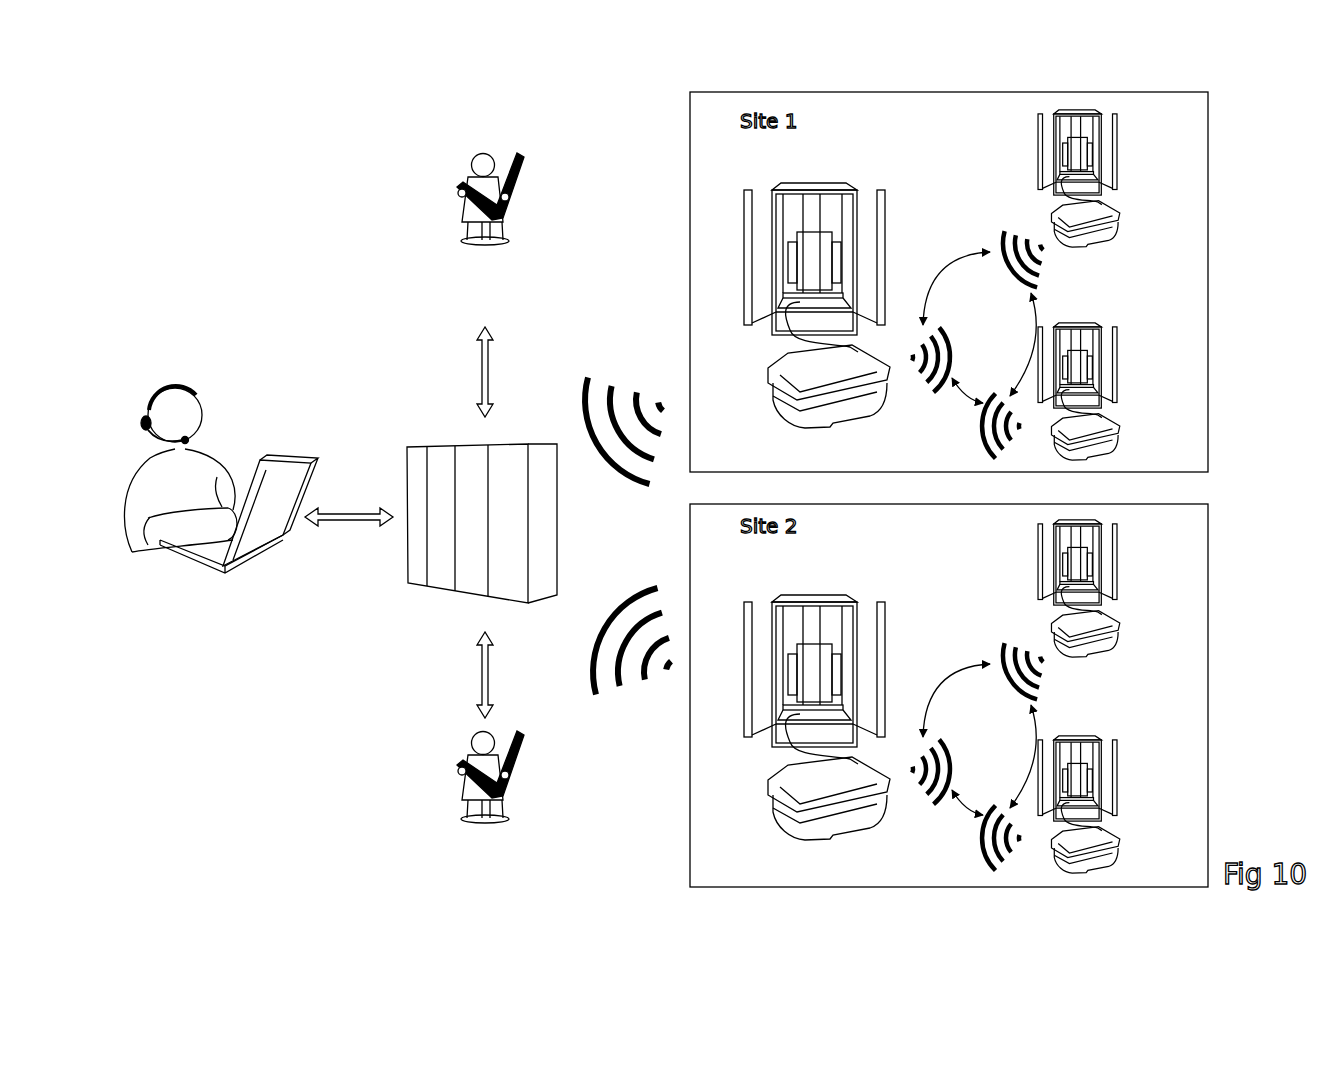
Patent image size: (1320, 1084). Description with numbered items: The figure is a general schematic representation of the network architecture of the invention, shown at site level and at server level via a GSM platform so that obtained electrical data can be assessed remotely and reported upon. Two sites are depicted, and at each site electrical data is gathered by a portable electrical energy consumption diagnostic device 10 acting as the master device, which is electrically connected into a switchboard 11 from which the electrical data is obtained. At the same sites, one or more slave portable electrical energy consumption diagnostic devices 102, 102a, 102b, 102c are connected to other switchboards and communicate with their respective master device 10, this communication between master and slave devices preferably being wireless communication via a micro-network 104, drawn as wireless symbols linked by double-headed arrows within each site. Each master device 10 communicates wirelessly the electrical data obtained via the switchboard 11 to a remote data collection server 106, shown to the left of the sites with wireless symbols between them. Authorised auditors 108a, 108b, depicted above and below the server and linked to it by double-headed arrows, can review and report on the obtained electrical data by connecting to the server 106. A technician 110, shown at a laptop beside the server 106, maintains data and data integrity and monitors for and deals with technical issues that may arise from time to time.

The portable electrical energy consumption diagnostic device 10 is at (780, 410).
The switchboard 11 is at (826, 185).
The slave portable electrical energy consumption diagnostic device 102 is at (1053, 213).
The slave portable electrical energy consumption diagnostic device 102a is at (1120, 432).
The slave portable electrical energy consumption diagnostic device 102b is at (1120, 642).
The slave portable electrical energy consumption diagnostic device 102c is at (1120, 848).
The micro-network 104 is at (984, 544).
The remote data collection server 106 is at (438, 589).
The authorised auditor 108a is at (483, 246).
The authorised auditor 108b is at (497, 826).
The technician 110 is at (160, 550).